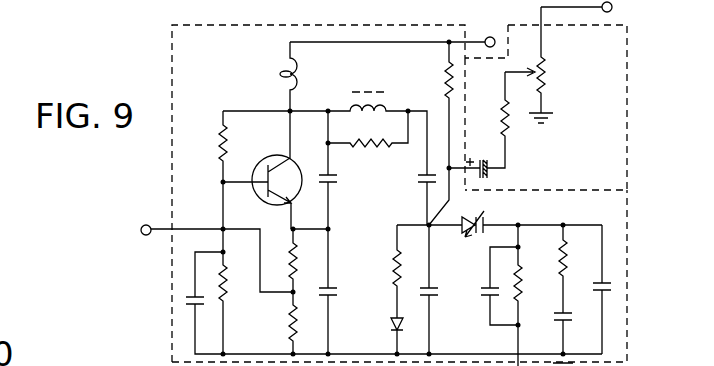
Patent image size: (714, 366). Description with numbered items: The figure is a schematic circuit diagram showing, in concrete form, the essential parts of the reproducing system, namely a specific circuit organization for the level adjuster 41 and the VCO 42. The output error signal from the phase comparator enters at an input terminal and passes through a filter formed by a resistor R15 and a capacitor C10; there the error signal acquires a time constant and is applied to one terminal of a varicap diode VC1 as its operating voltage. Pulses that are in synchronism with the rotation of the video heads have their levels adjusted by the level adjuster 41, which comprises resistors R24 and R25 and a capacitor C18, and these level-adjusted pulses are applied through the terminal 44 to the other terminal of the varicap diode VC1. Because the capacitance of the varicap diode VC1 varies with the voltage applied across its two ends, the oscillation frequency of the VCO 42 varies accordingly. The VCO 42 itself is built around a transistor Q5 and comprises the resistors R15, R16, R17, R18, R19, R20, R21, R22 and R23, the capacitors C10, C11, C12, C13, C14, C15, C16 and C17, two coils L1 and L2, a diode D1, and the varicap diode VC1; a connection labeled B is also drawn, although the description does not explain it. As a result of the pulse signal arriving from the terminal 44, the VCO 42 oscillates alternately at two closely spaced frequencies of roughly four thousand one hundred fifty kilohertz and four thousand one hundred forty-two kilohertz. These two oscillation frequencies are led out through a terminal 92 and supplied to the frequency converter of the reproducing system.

The VCO 42 is at (170, 62).
The level adjuster 41 is at (627, 62).
The terminal 44 is at (612, 9).
The terminal 92 is at (144, 224).
The +B supply terminal B is at (397, 30).
The transistor Q5 is at (262, 170).
The coil L1 is at (303, 76).
The coil L2 is at (358, 122).
The resistor R15 is at (539, 295).
The resistor R16 is at (582, 269).
The resistor R17 is at (408, 271).
The resistor R18 is at (367, 141).
The resistor R19 is at (233, 183).
The resistor R20 is at (288, 248).
The resistor R21 is at (272, 324).
The resistor R22 is at (243, 304).
The resistor R23 is at (429, 133).
The resistor R24 is at (545, 65).
The resistor R25 is at (518, 120).
The capacitor C10 is at (486, 286).
The capacitor C11 is at (552, 338).
The capacitor C12 is at (612, 287).
The capacitor C13 is at (445, 291).
The capacitor C14 is at (414, 200).
The capacitor C15 is at (344, 186).
The capacitor C16 is at (344, 292).
The capacitor C17 is at (184, 307).
The capacitor C18 is at (488, 176).
The diode D1 is at (384, 337).
The varicap diode VC1 is at (532, 220).